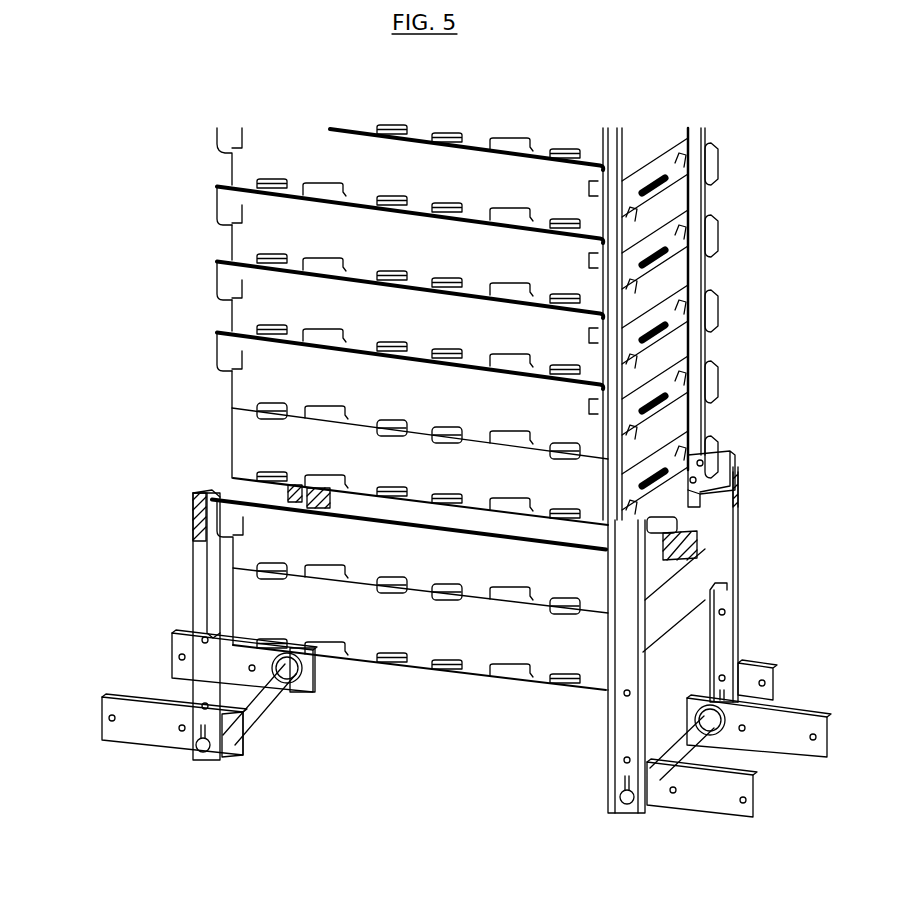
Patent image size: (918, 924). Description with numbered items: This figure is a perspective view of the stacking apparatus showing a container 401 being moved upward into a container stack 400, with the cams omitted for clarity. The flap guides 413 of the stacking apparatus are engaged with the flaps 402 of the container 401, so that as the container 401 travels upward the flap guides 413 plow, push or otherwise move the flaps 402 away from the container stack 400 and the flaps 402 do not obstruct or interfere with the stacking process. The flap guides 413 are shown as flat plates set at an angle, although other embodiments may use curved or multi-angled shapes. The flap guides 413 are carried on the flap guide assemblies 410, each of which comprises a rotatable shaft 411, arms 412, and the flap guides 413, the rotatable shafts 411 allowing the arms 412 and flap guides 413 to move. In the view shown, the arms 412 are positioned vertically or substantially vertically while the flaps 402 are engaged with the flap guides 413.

The container stack 400 is at (208, 128).
The container 401 is at (414, 640).
The flaps 402 is at (248, 548).
The flap guide assemblies 410 is at (92, 487).
The rotatable shafts 411 is at (263, 705).
The arms 412 is at (193, 580).
The flap guides 413 is at (208, 493).